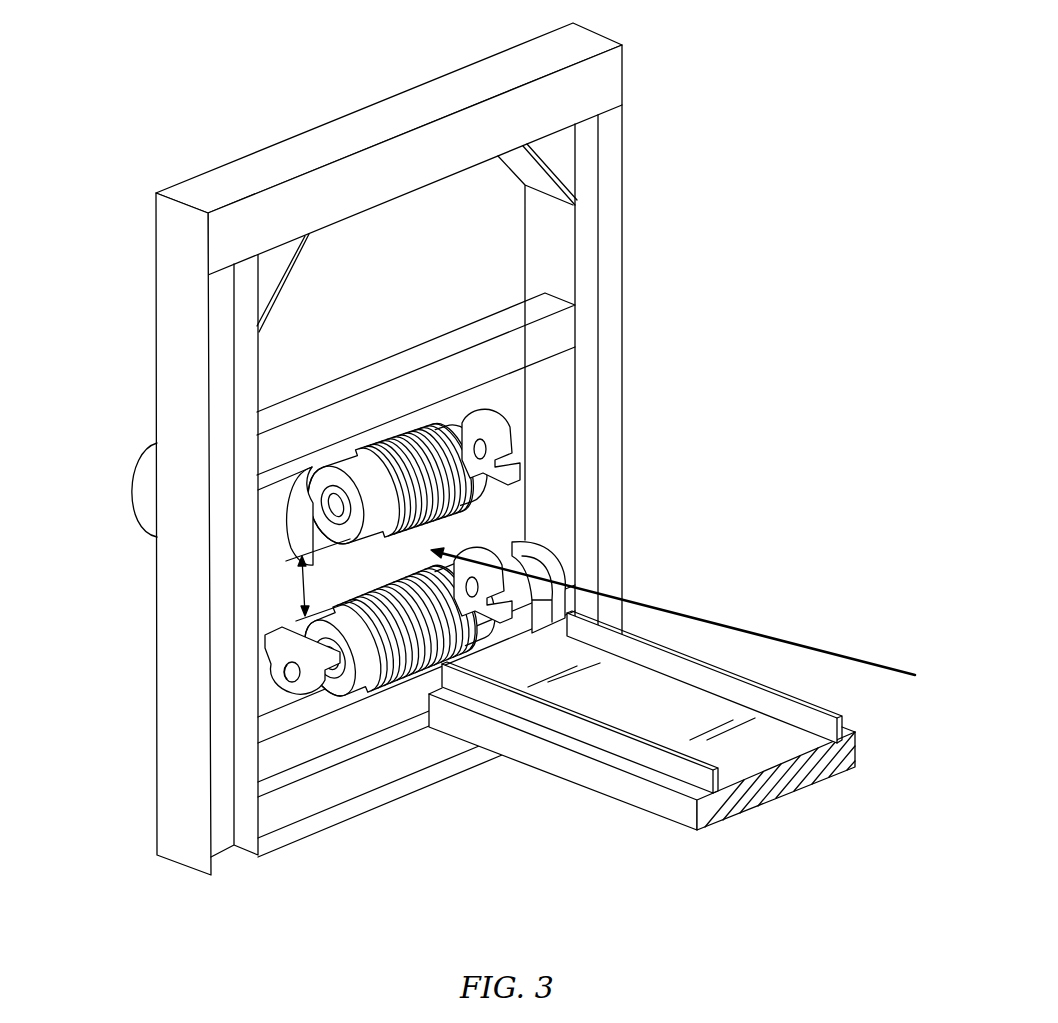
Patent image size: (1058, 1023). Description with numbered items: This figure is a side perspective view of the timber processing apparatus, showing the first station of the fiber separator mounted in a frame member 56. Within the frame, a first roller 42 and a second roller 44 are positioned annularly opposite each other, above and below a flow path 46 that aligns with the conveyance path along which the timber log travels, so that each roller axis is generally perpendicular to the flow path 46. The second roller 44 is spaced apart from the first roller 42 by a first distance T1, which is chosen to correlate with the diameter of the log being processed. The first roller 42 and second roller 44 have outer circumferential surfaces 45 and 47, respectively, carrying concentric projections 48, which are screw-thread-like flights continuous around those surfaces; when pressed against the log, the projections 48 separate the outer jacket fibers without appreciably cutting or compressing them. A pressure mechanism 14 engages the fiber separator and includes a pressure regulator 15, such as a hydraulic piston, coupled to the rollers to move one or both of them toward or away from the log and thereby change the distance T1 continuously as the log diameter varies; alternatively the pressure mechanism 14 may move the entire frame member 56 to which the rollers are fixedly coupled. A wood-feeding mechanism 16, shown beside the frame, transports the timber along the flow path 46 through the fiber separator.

The pressure mechanism 14 is at (122, 504).
The pressure regulator 15 is at (284, 552).
The wood-feeding mechanism 16 is at (636, 793).
The first roller 42 is at (326, 450).
The second roller 44 is at (358, 700).
The outer circumferential surface 45 is at (454, 437).
The flow path 46 is at (793, 644).
The outer circumferential surface 47 is at (373, 663).
The concentric projections 48 is at (402, 432).
The frame member 56 is at (247, 467).
The first distance T1 is at (335, 592).